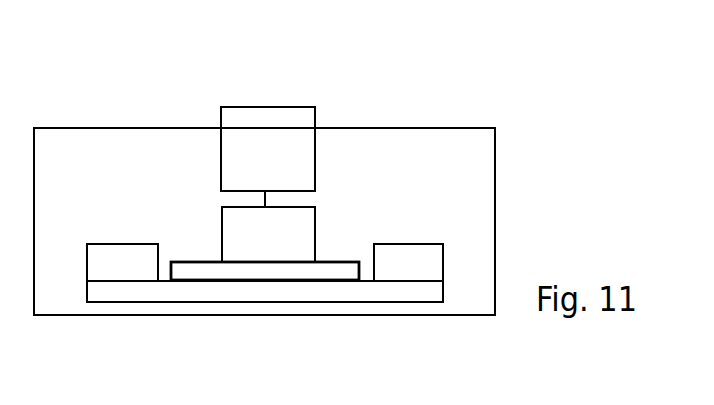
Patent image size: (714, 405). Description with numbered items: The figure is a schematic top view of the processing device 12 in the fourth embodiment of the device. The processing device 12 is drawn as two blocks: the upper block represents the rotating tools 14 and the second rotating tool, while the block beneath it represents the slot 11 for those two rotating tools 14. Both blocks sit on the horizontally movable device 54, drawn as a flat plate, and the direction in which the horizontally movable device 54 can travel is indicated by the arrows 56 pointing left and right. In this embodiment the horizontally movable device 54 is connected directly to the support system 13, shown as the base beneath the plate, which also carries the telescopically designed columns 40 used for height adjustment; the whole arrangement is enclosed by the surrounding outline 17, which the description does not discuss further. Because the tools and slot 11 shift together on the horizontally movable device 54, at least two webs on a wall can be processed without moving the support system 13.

The slot 11 is at (278, 251).
The processing device 12 is at (268, 143).
The support system 13 is at (270, 313).
The rotating tool 14 is at (297, 155).
The enclosure 17 is at (74, 133).
The telescopically designed columns 40 is at (420, 275).
The horizontally movable device 54 is at (171, 272).
The arrow 56 is at (196, 252).